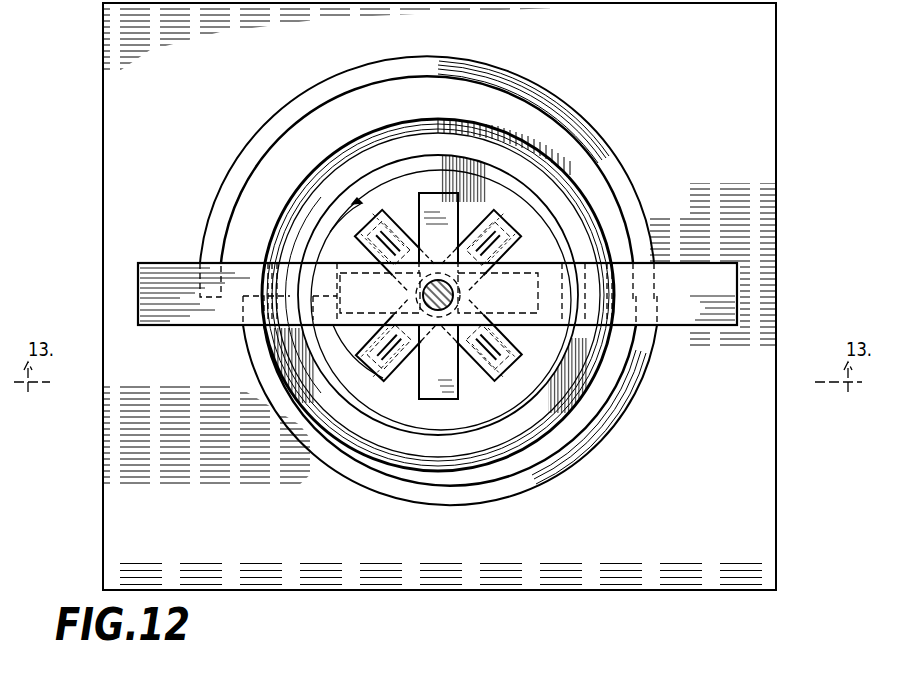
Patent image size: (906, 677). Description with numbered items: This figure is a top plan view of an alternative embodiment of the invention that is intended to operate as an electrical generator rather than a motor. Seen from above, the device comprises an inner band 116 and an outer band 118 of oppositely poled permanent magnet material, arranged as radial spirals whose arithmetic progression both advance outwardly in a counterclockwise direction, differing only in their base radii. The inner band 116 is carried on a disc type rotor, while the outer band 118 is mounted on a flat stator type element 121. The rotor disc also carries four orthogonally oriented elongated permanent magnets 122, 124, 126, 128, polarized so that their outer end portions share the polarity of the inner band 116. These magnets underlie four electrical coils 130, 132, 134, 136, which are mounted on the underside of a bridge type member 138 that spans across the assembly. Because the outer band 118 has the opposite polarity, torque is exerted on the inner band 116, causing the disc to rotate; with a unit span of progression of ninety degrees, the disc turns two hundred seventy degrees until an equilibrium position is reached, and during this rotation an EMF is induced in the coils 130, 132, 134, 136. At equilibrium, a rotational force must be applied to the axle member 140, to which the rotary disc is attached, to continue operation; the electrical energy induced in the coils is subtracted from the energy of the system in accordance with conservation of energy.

The inner band of permanent magnet material 116 is at (307, 198).
The outer band of permanent magnet material 118 is at (617, 172).
The flat stator type element 121 is at (535, 125).
The elongated permanent magnet 122 is at (436, 192).
The elongated permanent magnet 124 is at (524, 247).
The elongated permanent magnet 126 is at (430, 400).
The elongated permanent magnet 128 is at (362, 282).
The electrical coil 130 is at (380, 210).
The electrical coil 132 is at (513, 222).
The electrical coil 134 is at (488, 327).
The electrical coil 136 is at (370, 400).
The bridge type member 138 is at (682, 320).
The axle member 140 is at (422, 297).